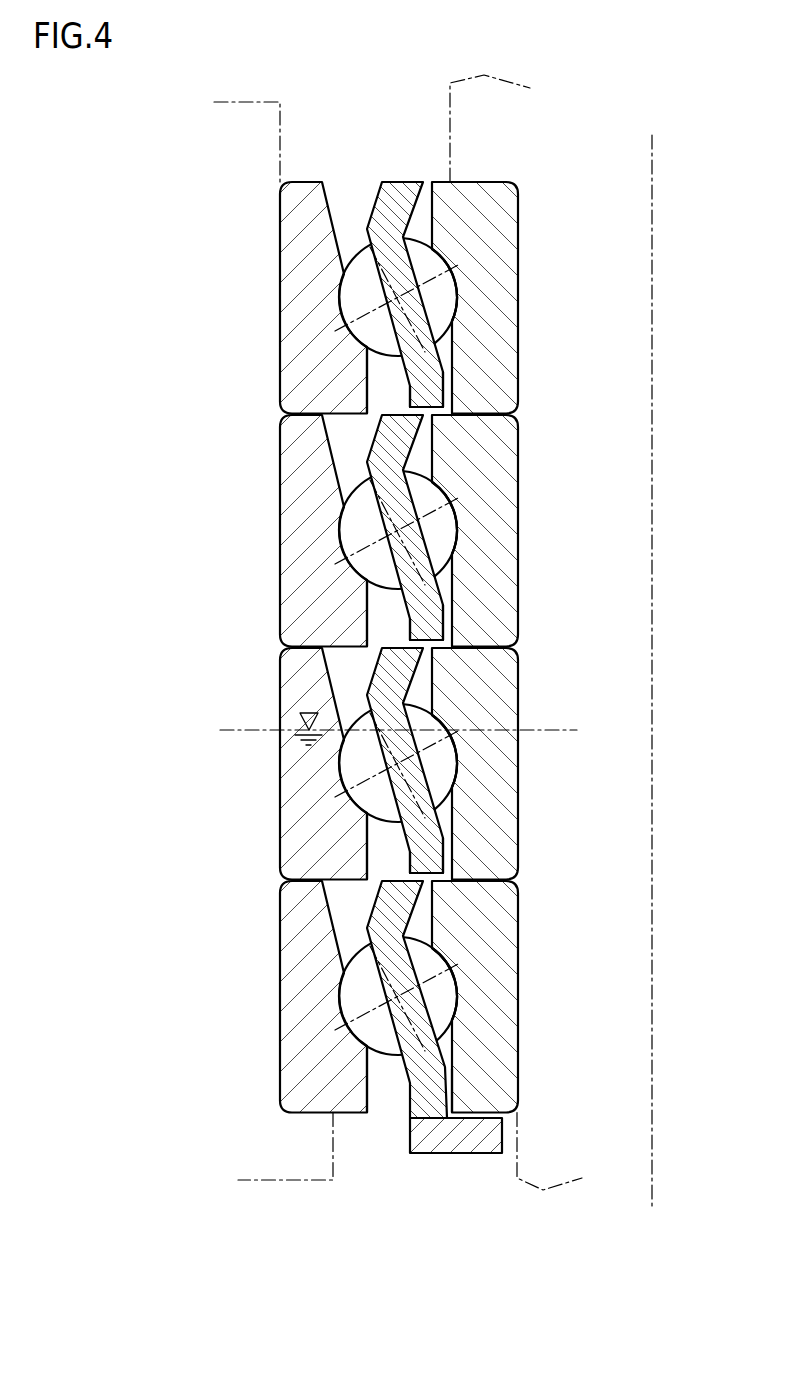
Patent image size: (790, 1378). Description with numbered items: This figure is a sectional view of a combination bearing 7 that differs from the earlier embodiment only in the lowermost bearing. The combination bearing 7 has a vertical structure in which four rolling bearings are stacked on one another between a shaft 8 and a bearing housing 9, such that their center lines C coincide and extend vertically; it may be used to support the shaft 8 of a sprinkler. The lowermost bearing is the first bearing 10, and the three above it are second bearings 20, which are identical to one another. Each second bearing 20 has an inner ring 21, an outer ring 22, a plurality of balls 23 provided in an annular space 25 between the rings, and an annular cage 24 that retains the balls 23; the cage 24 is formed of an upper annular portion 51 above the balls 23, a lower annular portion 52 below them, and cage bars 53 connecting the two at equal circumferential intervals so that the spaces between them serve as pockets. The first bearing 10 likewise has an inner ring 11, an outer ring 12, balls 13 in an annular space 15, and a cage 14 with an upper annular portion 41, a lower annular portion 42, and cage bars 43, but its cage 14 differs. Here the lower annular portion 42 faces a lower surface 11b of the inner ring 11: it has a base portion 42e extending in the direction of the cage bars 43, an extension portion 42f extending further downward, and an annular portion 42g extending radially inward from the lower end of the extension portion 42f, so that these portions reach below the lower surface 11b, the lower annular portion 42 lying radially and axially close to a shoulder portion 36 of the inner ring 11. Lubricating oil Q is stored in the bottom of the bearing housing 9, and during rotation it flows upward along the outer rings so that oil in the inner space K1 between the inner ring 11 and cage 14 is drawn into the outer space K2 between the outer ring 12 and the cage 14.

The combination bearing 7 is at (249, 1138).
The shaft 8 is at (450, 148).
The bearing housing 9 is at (280, 150).
The first bearing 10 is at (396, 1089).
The inner ring 11 is at (475, 997).
The lower surface 11b is at (490, 1135).
The outer ring 12 is at (325, 997).
The balls 13 is at (331, 990).
The cage 14 is at (503, 1007).
The annular space 15 is at (297, 1092).
The second bearing 20 is at (396, 531).
The inner ring 21 is at (518, 770).
The outer ring 22 is at (280, 793).
The balls 23 is at (345, 766).
The cage 24 is at (440, 828).
The annular space 25 is at (378, 850).
The shoulder portion 36 is at (513, 1089).
The upper annular portion 41 is at (410, 999).
The lower annular portion 42 is at (390, 1188).
The base portion 42e is at (353, 1166).
The extension portion 42f is at (397, 1176).
The annular portion 42g is at (444, 1198).
The cage bars 43 is at (286, 1076).
The upper annular portion 51 is at (407, 667).
The lower annular portion 52 is at (430, 862).
The cage bars 53 is at (367, 813).
The center line C is at (652, 135).
The inner space K1 is at (455, 1004).
The outer space K2 is at (445, 812).
The lubricating oil Q is at (285, 1167).